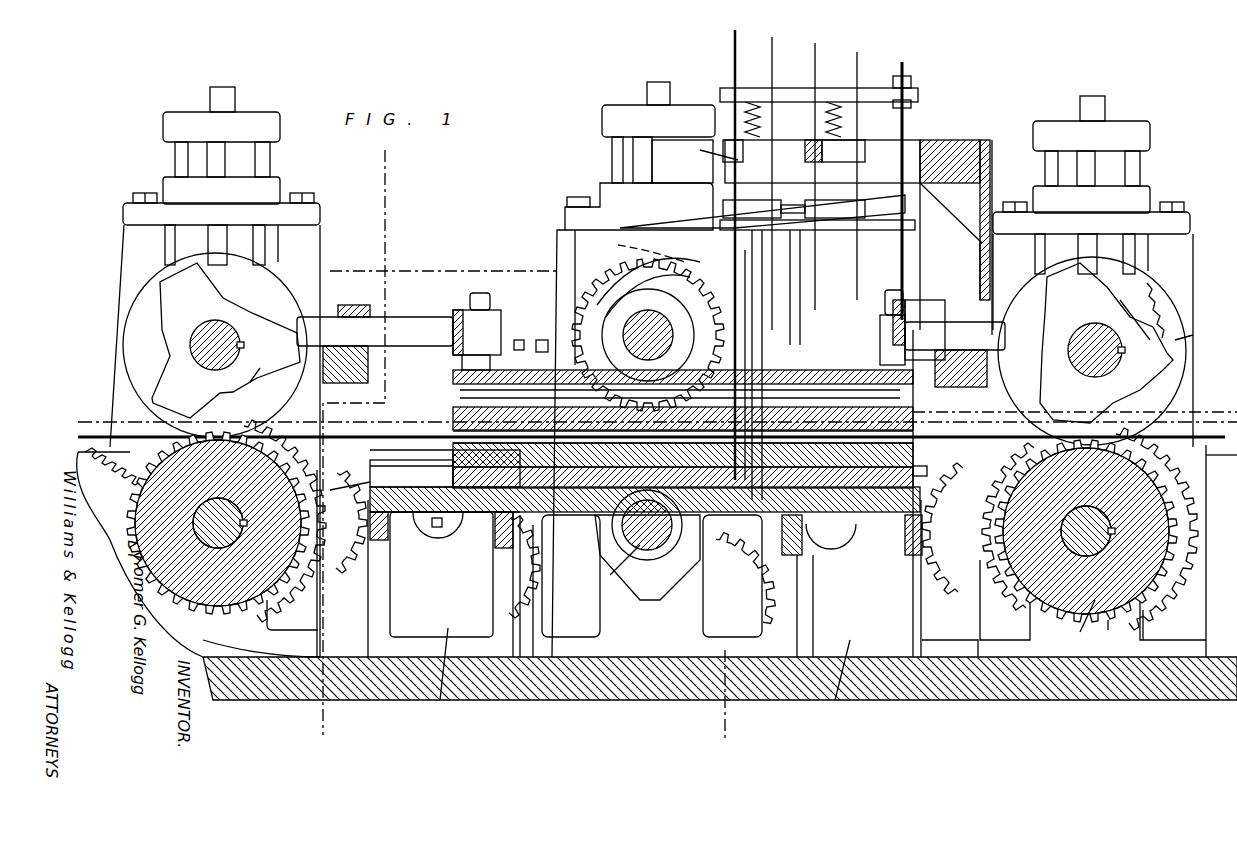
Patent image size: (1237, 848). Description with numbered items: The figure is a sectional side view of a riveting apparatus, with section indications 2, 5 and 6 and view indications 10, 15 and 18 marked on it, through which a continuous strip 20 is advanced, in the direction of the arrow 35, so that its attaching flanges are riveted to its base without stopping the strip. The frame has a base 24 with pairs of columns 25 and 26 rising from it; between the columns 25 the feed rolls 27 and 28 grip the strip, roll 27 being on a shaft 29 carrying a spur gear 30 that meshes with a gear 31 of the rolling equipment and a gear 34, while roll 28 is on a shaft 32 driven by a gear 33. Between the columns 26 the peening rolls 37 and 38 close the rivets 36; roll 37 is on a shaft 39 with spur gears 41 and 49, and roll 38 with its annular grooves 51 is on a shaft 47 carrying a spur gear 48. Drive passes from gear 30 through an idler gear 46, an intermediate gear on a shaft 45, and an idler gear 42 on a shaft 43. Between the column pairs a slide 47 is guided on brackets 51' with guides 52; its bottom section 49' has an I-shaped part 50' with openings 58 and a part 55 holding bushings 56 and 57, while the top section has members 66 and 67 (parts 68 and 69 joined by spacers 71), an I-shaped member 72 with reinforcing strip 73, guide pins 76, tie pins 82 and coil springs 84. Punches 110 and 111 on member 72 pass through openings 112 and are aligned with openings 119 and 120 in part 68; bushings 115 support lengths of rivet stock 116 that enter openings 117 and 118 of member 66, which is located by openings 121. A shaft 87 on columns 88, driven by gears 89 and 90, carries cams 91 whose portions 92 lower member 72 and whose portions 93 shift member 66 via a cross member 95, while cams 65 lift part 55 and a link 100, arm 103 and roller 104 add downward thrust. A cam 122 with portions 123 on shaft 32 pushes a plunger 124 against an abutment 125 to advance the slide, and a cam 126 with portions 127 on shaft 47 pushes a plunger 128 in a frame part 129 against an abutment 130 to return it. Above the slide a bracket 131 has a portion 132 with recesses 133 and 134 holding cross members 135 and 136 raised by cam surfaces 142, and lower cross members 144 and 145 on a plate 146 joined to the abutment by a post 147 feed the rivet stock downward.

The section line 2- 2 is at (735, 24).
The section line 5- 5 is at (446, 271).
The section line 6- 6 is at (385, 150).
The view direction 10 is at (497, 495).
The view direction 15 is at (635, 115).
The view direction 18 is at (785, 188).
The strip 20 is at (90, 437).
The base 24 is at (928, 700).
The columns 25 is at (1183, 252).
The columns 26 is at (135, 240).
The roll 27 is at (1080, 624).
The roll 28 is at (1150, 281).
The shaft 29 is at (1086, 531).
The spur gear 30 is at (1150, 622).
The gear 31 is at (1203, 548).
The shaft 32 is at (1105, 366).
The gear 33 is at (1199, 335).
The gear 34 is at (1110, 634).
The arrow 35 is at (1236, 462).
The rivets 36 is at (378, 452).
The roll 37 is at (130, 520).
The roll 38 is at (292, 317).
The shaft 39 is at (218, 523).
The spur gear 41 is at (317, 550).
The idler gear 42 is at (524, 584).
The shaft 43 is at (465, 534).
The shaft 45 is at (647, 545).
The idler gear 46 is at (962, 598).
The shaft 47 is at (240, 336).
The spur gear 48 is at (450, 405).
The spur gear 49 is at (255, 640).
The bottom section 49' is at (641, 465).
The I-shaped part 50' is at (663, 507).
The annular grooves 51 is at (843, 683).
The brackets 51' is at (444, 677).
The guides 52 is at (928, 494).
The part 55 is at (915, 462).
The bushings 56 is at (690, 504).
The bushings 57 is at (747, 576).
The openings 58 is at (751, 537).
The cams 65 is at (619, 567).
The member 66 is at (758, 396).
The member 67 is at (915, 415).
The part 68 is at (450, 432).
The part 69 is at (745, 345).
The spacers 71 is at (400, 419).
The member 72 is at (907, 373).
The strip 73 is at (885, 340).
The guide pins 76 is at (472, 300).
The pins 82 is at (682, 343).
The coil springs 84 is at (703, 354).
The shaft 87 is at (648, 335).
The columns 88 is at (565, 212).
The gear 89 is at (700, 290).
The gear 90 is at (585, 573).
The cams 91 is at (595, 283).
The cam portions 92 is at (593, 322).
The cam portions 93 is at (632, 258).
The cross member 95 is at (618, 399).
The link 100 is at (712, 208).
The arm 103 is at (800, 296).
The roller 104 is at (748, 365).
The punches 110 is at (713, 346).
The punches 111 is at (757, 334).
The openings 112 is at (685, 397).
The bushings 115 is at (821, 400).
The bushing stock 116 is at (737, 85).
The openings 117 is at (722, 533).
The openings 118 is at (887, 586).
The openings 119 is at (602, 506).
The openings 120 is at (740, 507).
The openings 121 is at (927, 392).
The cam 122 is at (1096, 300).
The cam portions 123 is at (1150, 395).
The plunger 124 is at (962, 341).
The abutment 125 is at (900, 318).
The cam 126 is at (172, 306).
The cam portions 127 is at (1002, 408).
The plunger 128 is at (395, 320).
The part 129 is at (352, 308).
The abutment 130 is at (492, 330).
The plate 131 is at (988, 140).
The portion 132 is at (947, 153).
The recess 133 is at (860, 140).
The recess 134 is at (770, 140).
The cross member 135 is at (831, 159).
The cross member 136 is at (722, 158).
The cam surfaces 142 is at (680, 128).
The cross member 144 is at (817, 214).
The cross member 145 is at (849, 198).
The plate 146 is at (818, 287).
The post 147 is at (923, 196).